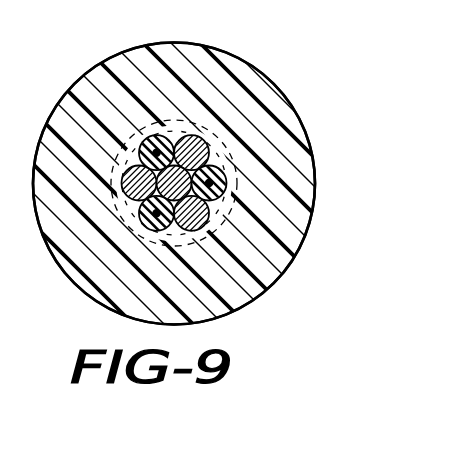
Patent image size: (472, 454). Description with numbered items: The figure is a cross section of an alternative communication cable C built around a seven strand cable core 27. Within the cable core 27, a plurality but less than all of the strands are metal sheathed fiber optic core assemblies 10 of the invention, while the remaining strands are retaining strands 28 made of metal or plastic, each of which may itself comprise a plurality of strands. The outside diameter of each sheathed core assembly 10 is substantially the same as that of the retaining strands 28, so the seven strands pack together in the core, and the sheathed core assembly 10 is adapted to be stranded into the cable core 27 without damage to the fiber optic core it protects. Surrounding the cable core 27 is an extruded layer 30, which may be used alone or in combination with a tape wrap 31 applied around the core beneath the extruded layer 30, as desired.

The sheathed core assembly 10 is at (138, 133).
The cable core 27 is at (203, 124).
The communication cable C is at (174, 176).
The extruded layer 30 is at (236, 227).
The tape wrap 31 is at (261, 145).
The retaining strands 28 is at (222, 221).